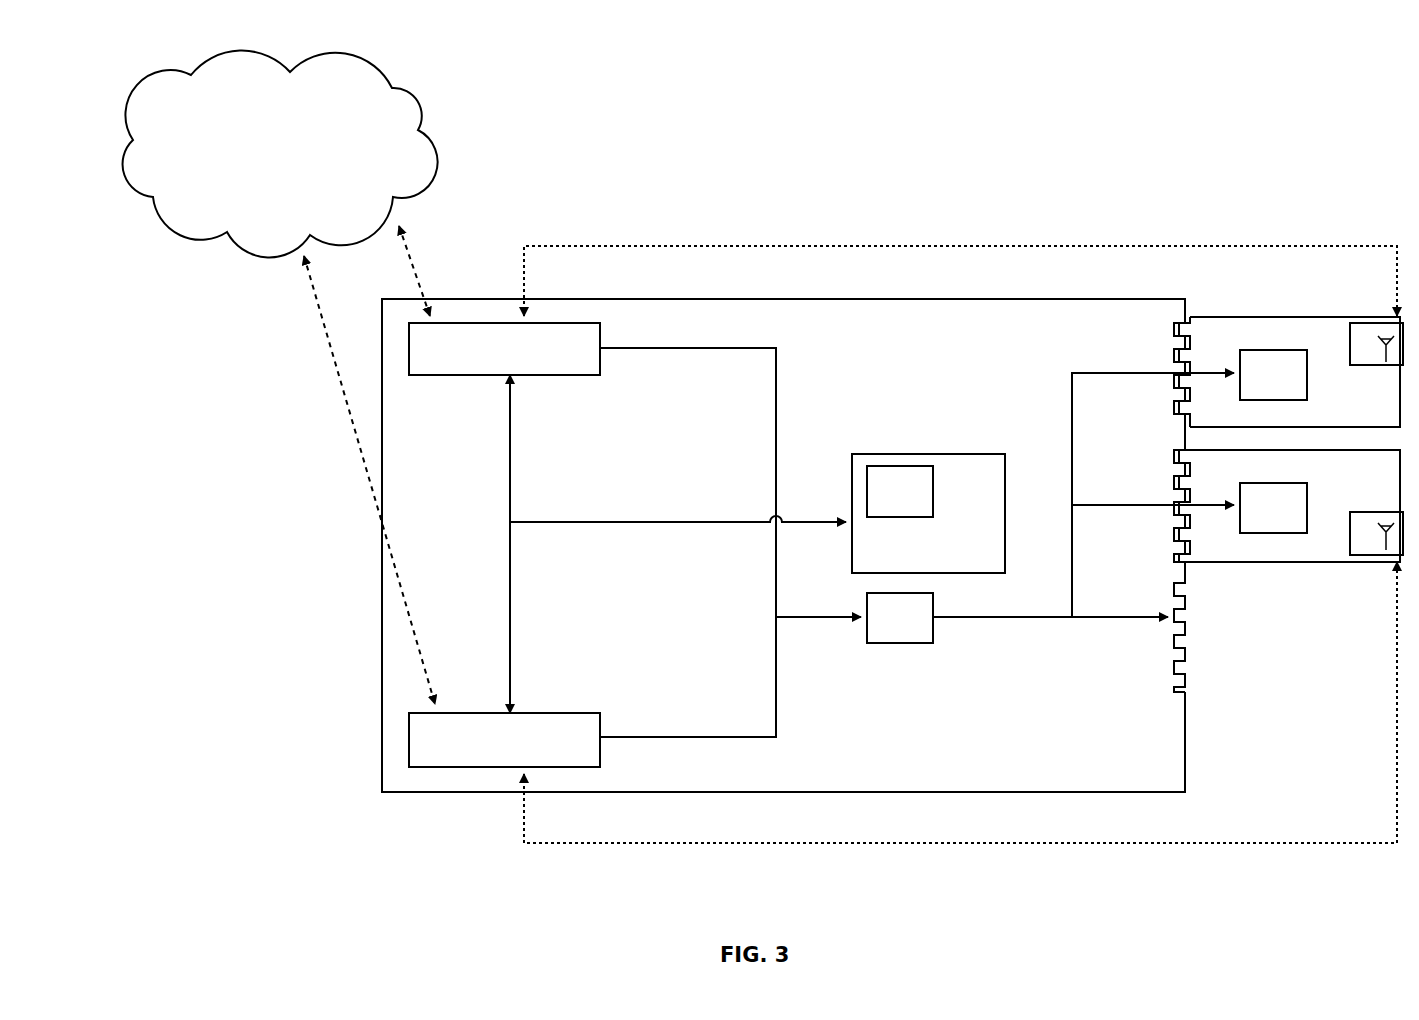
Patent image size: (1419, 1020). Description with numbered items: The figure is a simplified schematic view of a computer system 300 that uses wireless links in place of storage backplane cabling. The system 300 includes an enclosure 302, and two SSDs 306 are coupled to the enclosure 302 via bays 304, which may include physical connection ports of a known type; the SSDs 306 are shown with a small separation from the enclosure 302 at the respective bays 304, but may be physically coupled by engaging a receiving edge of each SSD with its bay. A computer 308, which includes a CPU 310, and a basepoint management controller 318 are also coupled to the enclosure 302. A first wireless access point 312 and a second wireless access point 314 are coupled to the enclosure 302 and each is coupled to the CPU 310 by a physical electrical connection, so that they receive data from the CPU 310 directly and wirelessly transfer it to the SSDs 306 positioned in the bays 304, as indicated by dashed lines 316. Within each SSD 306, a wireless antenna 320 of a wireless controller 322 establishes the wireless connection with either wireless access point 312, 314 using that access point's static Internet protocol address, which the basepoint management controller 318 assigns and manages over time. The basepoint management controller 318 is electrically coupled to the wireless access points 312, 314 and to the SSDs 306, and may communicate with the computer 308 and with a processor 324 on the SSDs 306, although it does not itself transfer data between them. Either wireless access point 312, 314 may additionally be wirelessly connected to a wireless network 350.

The system 300 is at (1275, 96).
The enclosure 302 is at (382, 645).
The bay 304 is at (1163, 452).
The SSD 306 is at (1262, 317).
The computer 308 is at (928, 513).
The CPU 310 is at (900, 491).
The first wireless access point 312 is at (466, 767).
The second wireless access point 314 is at (485, 323).
The dashed lines 316 is at (1016, 246).
The basepoint management controller 318 is at (900, 618).
The wireless antenna 320 is at (1380, 350).
The wireless controller 322 is at (1358, 365).
The processor 324 is at (1273, 441).
The wireless network 350 is at (205, 243).